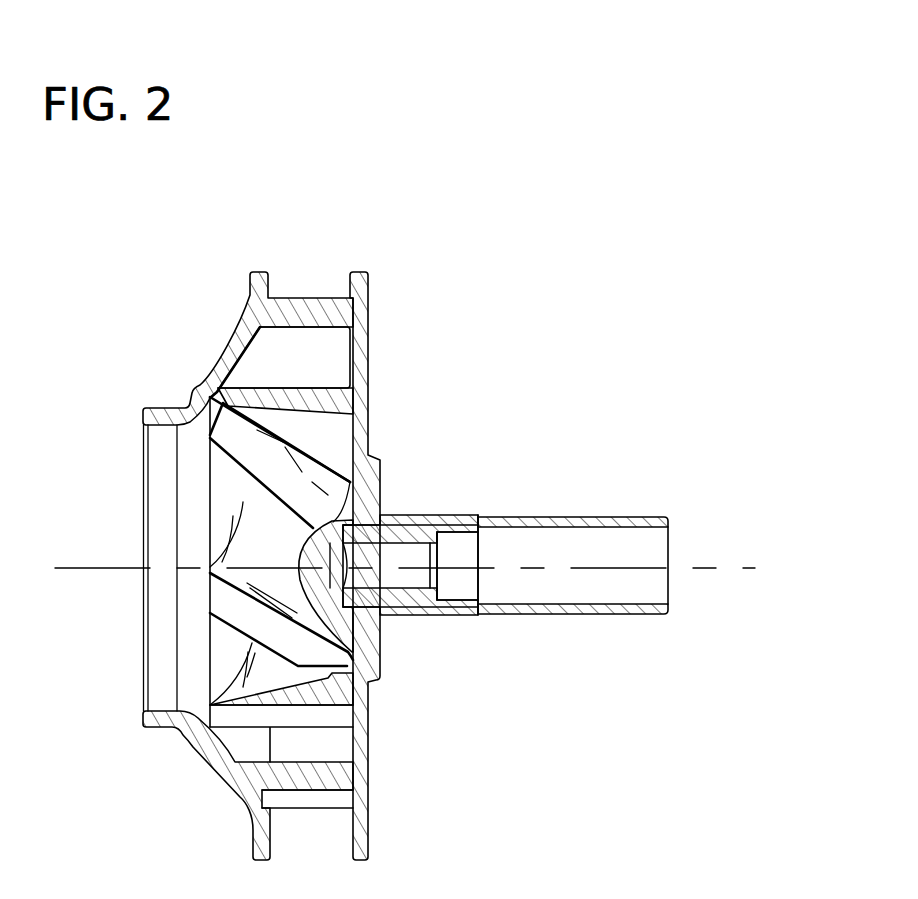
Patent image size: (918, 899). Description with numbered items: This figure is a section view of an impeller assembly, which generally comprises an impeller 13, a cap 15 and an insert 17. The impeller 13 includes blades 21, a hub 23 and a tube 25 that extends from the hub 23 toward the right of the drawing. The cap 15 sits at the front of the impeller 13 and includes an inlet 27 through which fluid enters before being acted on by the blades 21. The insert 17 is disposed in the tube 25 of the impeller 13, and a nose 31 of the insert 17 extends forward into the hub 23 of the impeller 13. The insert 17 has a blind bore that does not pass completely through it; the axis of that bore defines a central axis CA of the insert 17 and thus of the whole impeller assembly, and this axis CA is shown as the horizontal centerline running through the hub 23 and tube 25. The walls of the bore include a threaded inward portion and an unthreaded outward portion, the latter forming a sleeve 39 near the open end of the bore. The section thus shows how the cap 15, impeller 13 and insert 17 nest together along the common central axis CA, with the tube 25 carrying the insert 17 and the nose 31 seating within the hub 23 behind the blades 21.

The impeller 13 is at (311, 536).
The cap 15 is at (240, 333).
The insert 17 is at (440, 573).
The blades 21 is at (280, 438).
The hub 23 is at (363, 660).
The tube 25 is at (582, 517).
The inlet 27 is at (155, 427).
The nose 31 is at (380, 620).
The sleeve 39 is at (467, 600).
The central axis CA is at (734, 563).